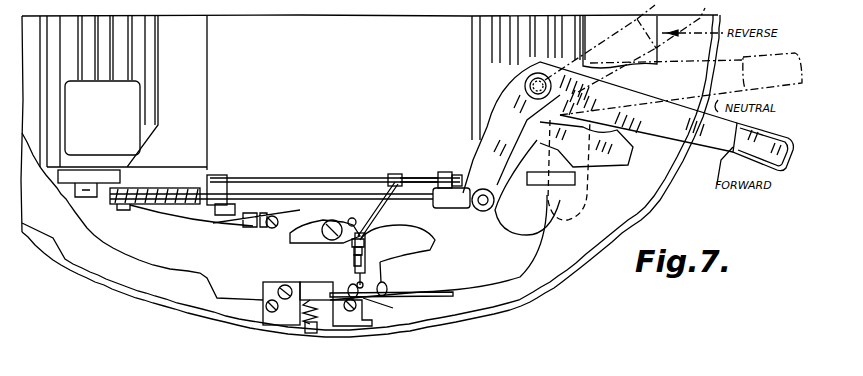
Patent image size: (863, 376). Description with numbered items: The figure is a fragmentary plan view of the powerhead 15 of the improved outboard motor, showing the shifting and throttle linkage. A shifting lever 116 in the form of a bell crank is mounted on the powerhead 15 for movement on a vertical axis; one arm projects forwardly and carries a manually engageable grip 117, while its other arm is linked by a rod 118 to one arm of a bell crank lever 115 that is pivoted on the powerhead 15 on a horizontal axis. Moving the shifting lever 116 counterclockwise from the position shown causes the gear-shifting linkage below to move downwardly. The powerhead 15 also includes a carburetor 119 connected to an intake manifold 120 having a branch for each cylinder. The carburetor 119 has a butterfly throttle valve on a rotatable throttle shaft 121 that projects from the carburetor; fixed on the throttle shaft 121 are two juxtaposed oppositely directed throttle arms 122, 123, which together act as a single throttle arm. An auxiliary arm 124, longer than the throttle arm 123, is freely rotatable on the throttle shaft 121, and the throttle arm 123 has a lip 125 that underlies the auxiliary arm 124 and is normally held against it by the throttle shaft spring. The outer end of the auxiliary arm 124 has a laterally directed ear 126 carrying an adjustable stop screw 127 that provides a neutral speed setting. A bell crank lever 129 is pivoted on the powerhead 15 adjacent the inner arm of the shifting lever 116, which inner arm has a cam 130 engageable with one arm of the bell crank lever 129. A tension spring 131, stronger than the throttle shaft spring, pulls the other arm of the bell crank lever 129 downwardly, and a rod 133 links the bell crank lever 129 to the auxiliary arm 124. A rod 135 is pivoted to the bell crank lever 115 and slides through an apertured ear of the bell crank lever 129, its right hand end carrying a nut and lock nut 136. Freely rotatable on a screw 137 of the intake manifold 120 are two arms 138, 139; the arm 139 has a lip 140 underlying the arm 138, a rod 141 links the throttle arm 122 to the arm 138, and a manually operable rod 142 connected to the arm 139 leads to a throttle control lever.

The powerhead 15 is at (303, 67).
The bell crank lever 115 is at (135, 205).
The shifting lever 116 is at (702, 140).
The manually engageable grip 117 is at (795, 172).
The rod 118 is at (318, 196).
The carburetor 119 is at (290, 322).
The intake manifold 120 is at (210, 252).
The throttle shaft 121 is at (377, 258).
The throttle arm 122 is at (378, 283).
The throttle arm 123 is at (377, 237).
The auxiliary arm 124 is at (355, 265).
The lip 125 is at (355, 253).
The ear 126 is at (365, 213).
The adjustable stop screw 127 is at (352, 243).
The bell crank lever 129 is at (415, 177).
The cam 130 is at (460, 175).
The tension spring 131 is at (397, 173).
The rod 133 is at (386, 215).
The rod 135 is at (299, 178).
The nut and lock nut 136 is at (450, 172).
The screw 137 is at (333, 303).
The arm 138 is at (380, 306).
The arm 139 is at (333, 300).
The lip 140 is at (360, 313).
The rod 141 is at (358, 287).
The manually operable rod 142 is at (437, 296).